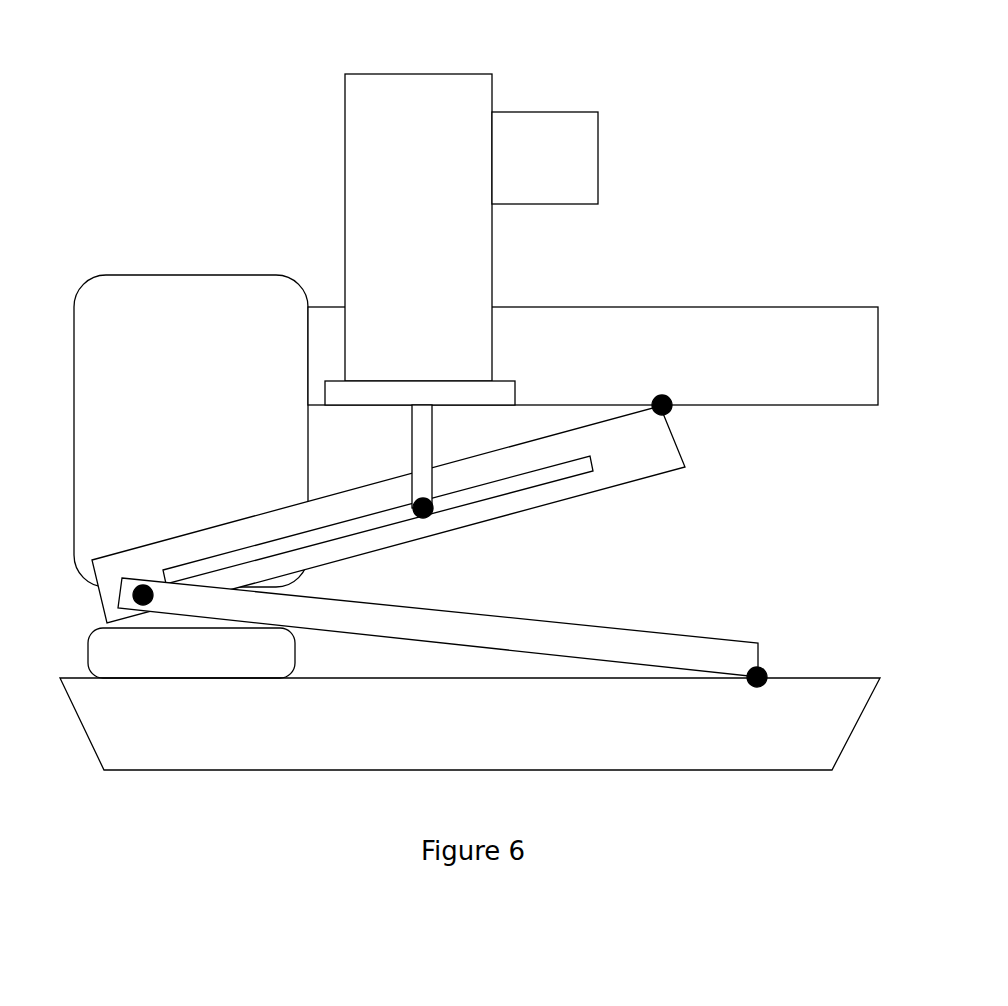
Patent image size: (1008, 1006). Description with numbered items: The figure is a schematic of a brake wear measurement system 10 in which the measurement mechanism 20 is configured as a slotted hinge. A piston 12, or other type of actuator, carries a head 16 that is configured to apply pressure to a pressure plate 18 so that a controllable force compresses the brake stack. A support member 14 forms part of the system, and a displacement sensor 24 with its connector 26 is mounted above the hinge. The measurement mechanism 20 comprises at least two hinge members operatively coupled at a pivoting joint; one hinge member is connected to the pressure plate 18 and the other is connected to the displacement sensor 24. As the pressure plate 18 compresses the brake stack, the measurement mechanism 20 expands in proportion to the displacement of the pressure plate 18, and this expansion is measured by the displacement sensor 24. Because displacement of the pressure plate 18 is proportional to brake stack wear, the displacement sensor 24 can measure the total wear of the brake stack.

The brake wear measurement system 10 is at (178, 124).
The piston 12 is at (132, 303).
The support member 14 is at (806, 374).
The head 16 is at (122, 645).
The pressure plate 18 is at (188, 771).
The measurement mechanism 20 is at (633, 456).
The displacement sensor 24 is at (385, 143).
The connector 26 is at (572, 173).